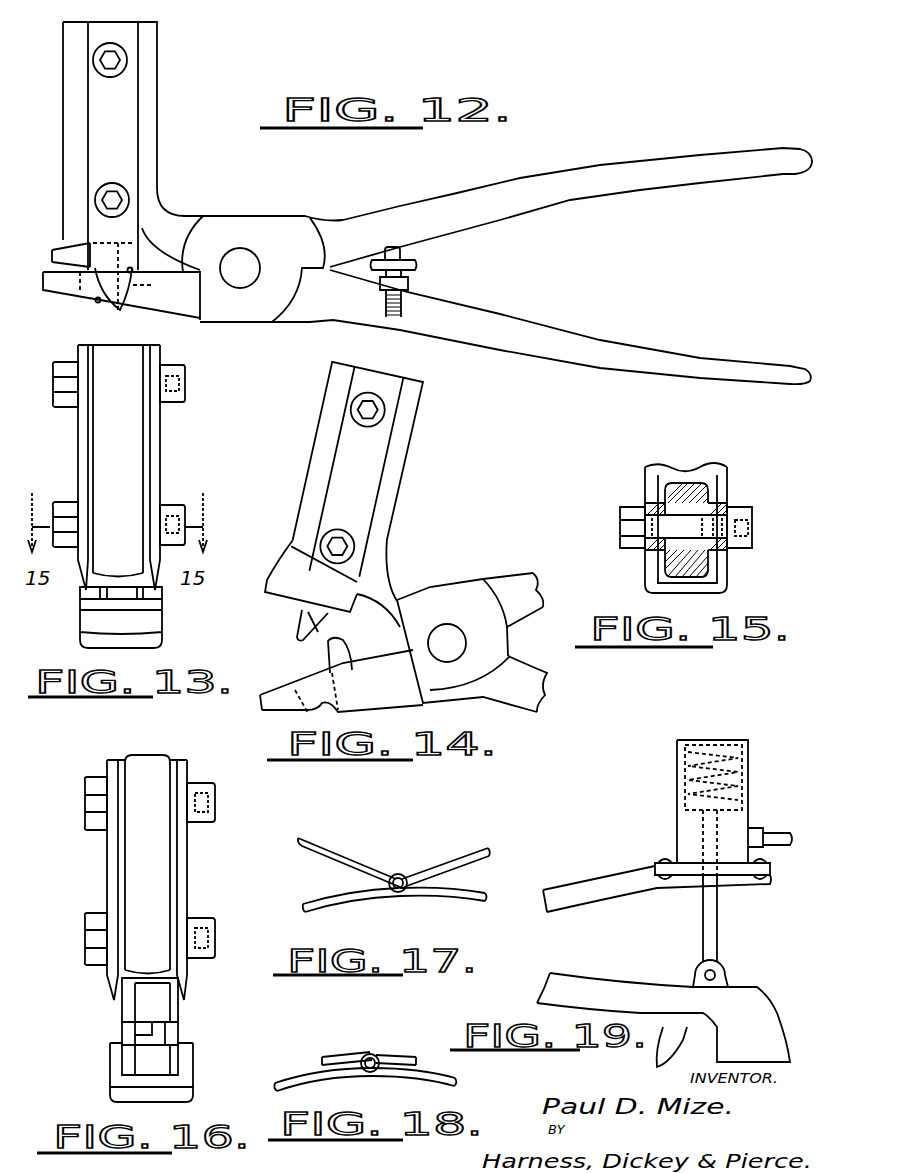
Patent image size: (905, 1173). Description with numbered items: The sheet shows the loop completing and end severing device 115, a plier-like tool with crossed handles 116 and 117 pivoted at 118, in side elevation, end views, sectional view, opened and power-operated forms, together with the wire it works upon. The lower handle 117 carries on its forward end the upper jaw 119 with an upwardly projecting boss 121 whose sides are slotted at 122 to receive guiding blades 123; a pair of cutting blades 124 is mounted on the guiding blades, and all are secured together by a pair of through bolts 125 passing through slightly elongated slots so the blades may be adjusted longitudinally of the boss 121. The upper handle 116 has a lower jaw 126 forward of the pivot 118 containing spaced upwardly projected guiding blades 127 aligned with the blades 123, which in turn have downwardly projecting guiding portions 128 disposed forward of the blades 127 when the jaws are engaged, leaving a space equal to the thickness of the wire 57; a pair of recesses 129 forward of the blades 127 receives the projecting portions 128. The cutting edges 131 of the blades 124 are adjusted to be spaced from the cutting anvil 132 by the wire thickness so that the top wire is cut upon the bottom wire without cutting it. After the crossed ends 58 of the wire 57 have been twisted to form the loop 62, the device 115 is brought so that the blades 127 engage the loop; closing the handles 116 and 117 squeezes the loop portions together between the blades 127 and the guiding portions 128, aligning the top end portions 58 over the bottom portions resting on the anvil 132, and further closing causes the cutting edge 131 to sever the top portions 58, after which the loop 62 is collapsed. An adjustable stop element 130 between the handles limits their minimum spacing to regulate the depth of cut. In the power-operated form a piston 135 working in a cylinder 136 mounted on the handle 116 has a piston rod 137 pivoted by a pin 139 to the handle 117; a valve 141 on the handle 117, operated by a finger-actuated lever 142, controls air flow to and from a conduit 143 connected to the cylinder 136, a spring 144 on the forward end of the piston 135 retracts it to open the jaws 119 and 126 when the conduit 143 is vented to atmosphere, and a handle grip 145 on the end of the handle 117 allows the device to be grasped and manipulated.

In FIG. 12, the wire 57 is at (133, 286).
In FIG. 12, the crossed ends of the wire 58 is at (87, 240).
In FIG. 17, the crossed ends of the wire 58 is at (330, 851).
In FIG. 18, the crossed ends of the wire 58 is at (329, 1061).
In FIG. 17, the loop 62 is at (402, 880).
In FIG. 18, the loop 62 is at (376, 1056).
In FIG. 12, the loop completing and end severing device 115 is at (460, 179).
In FIG. 14, the loop completing and end severing device 115 is at (524, 568).
In FIG. 12, the upper handle 116 is at (611, 160).
In FIG. 14, the upper handle 116 is at (540, 580).
In FIG. 19, the upper handle 116 is at (605, 879).
In FIG. 12, the lower handle 117 is at (603, 340).
In FIG. 14, the lower handle 117 is at (545, 682).
In FIG. 19, the lower handle 117 is at (620, 958).
In FIG. 12, the pivot 118 is at (247, 258).
In FIG. 14, the pivot 118 is at (452, 626).
In FIG. 12, the upper jaw 119 is at (182, 218).
In FIG. 12, the boss 121 is at (150, 88).
In FIG. 13, the boss 121 is at (130, 437).
In FIG. 14, the boss 121 is at (402, 434).
In FIG. 15, the boss 121 is at (688, 483).
In FIG. 16, the boss 121 is at (158, 858).
In FIG. 12, the slots 122 is at (130, 121).
In FIG. 14, the slots 122 is at (398, 375).
In FIG. 15, the guiding blades 123 is at (668, 468).
In FIG. 12, the cutting blades 124 is at (125, 33).
In FIG. 13, the cutting blades 124 is at (80, 460).
In FIG. 14, the cutting blades 124 is at (371, 373).
In FIG. 15, the cutting blades 124 is at (645, 505).
In FIG. 16, the cutting blades 124 is at (110, 890).
In FIG. 12, the through bolts 125 is at (118, 63).
In FIG. 13, the through bolts 125 is at (185, 393).
In FIG. 14, the through bolts 125 is at (352, 408).
In FIG. 15, the through bolts 125 is at (743, 549).
In FIG. 16, the through bolts 125 is at (216, 803).
In FIG. 12, the lower jaw 126 is at (178, 326).
In FIG. 13, the lower jaw 126 is at (160, 637).
In FIG. 14, the lower jaw 126 is at (393, 700).
In FIG. 16, the lower jaw 126 is at (188, 1085).
In FIG. 14, the guiding blades 127 is at (342, 648).
In FIG. 16, the guiding blades 127 is at (128, 1036).
In FIG. 12, the guiding portions 128 is at (97, 298).
In FIG. 13, the guiding portions 128 is at (96, 594).
In FIG. 14, the guiding portions 128 is at (303, 627).
In FIG. 16, the guiding portions 128 is at (122, 1010).
In FIG. 14, the recesses 129 is at (305, 708).
In FIG. 12, the adjustable stop element 130 is at (416, 264).
In FIG. 19, the adjustable stop element 130 is at (718, 975).
In FIG. 12, the cutting edges 131 is at (160, 263).
In FIG. 14, the cutting edges 131 is at (317, 636).
In FIG. 12, the cutting anvil 132 is at (120, 312).
In FIG. 19, the piston 135 is at (736, 806).
In FIG. 19, the cylinder 136 is at (747, 812).
In FIG. 19, the piston rod 137 is at (712, 910).
In FIG. 19, the pin 139 is at (718, 963).
In FIG. 19, the valve 141 is at (673, 1000).
In FIG. 19, the finger-actuated lever 142 is at (673, 1053).
In FIG. 19, the conduit 143 is at (768, 833).
In FIG. 19, the spring 144 is at (737, 748).
In FIG. 19, the handle grip 145 is at (777, 1017).